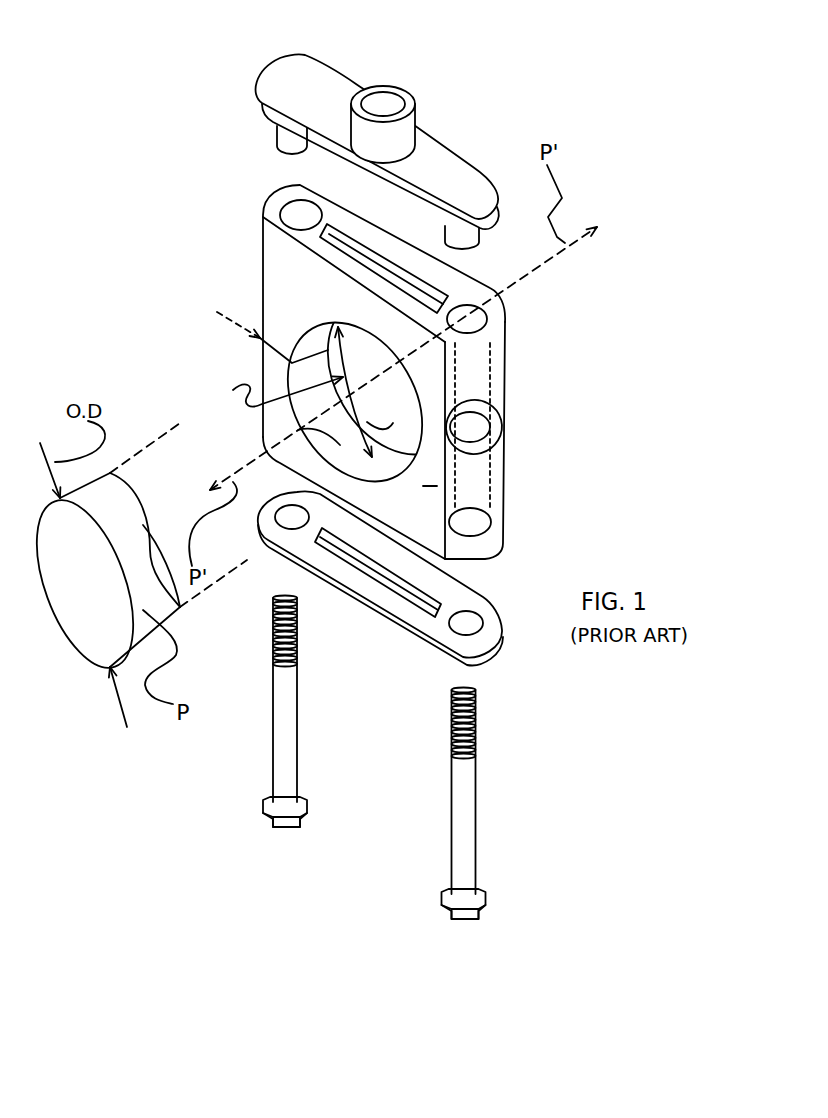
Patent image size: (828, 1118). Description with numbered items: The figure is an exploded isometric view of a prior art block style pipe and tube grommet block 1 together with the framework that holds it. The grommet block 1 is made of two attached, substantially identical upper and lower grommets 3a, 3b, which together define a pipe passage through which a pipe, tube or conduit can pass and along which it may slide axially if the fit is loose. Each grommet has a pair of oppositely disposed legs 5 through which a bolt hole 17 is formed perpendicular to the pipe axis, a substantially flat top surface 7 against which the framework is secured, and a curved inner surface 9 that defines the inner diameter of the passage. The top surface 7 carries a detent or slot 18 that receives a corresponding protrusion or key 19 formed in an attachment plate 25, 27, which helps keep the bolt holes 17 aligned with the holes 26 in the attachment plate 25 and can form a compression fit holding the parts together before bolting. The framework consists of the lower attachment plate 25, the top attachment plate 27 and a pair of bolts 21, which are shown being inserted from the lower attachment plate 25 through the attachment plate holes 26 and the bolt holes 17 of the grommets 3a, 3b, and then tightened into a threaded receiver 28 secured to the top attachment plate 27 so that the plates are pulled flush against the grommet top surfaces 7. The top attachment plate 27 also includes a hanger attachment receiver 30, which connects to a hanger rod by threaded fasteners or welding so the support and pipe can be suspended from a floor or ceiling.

The grommet block 1 is at (542, 382).
The upper grommet 3a is at (270, 295).
The lower grommet 3b is at (503, 477).
The legs 5 is at (278, 334).
The top surface 7 is at (297, 243).
The curved inner surface 9 is at (303, 427).
The bolt holes 17 is at (290, 213).
The slot 18 is at (437, 287).
The key 19 is at (358, 557).
The bolts 21 is at (283, 722).
The lower attachment plate 25 is at (438, 583).
The attachment plate holes 26 is at (473, 625).
The top attachment plate 27 is at (302, 80).
The threaded receiver 28 is at (277, 137).
The hanger attachment receiver 30 is at (418, 132).